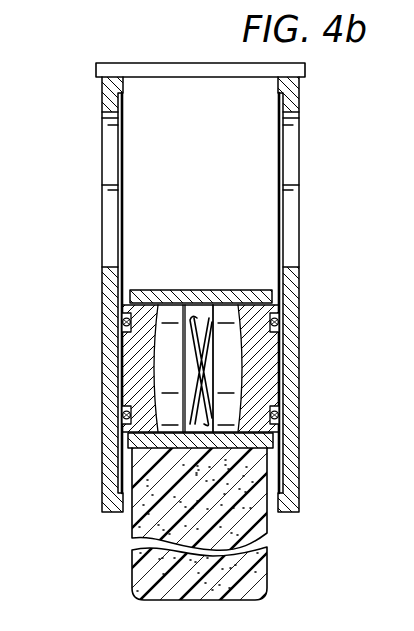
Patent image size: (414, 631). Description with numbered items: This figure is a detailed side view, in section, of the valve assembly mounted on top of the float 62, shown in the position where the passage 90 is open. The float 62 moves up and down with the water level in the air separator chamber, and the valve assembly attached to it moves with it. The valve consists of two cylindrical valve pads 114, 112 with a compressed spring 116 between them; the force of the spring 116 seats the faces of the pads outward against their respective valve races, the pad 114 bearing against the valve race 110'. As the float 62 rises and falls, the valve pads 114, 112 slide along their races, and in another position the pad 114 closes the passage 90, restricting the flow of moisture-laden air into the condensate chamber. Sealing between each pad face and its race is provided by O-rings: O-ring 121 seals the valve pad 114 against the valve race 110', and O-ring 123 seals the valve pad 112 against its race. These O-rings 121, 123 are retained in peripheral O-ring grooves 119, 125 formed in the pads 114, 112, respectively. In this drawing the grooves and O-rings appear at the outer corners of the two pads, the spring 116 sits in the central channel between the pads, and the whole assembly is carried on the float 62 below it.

The passage 90 is at (110, 146).
The valve race 110' is at (207, 315).
The valve pad 112 is at (262, 393).
The valve pad 114 is at (128, 368).
The spring 116 is at (216, 372).
The O-ring groove 119 is at (122, 320).
The O-ring 121 is at (120, 413).
The O-ring 123 is at (283, 418).
The O-ring groove 125 is at (288, 337).
The float 62 is at (267, 533).